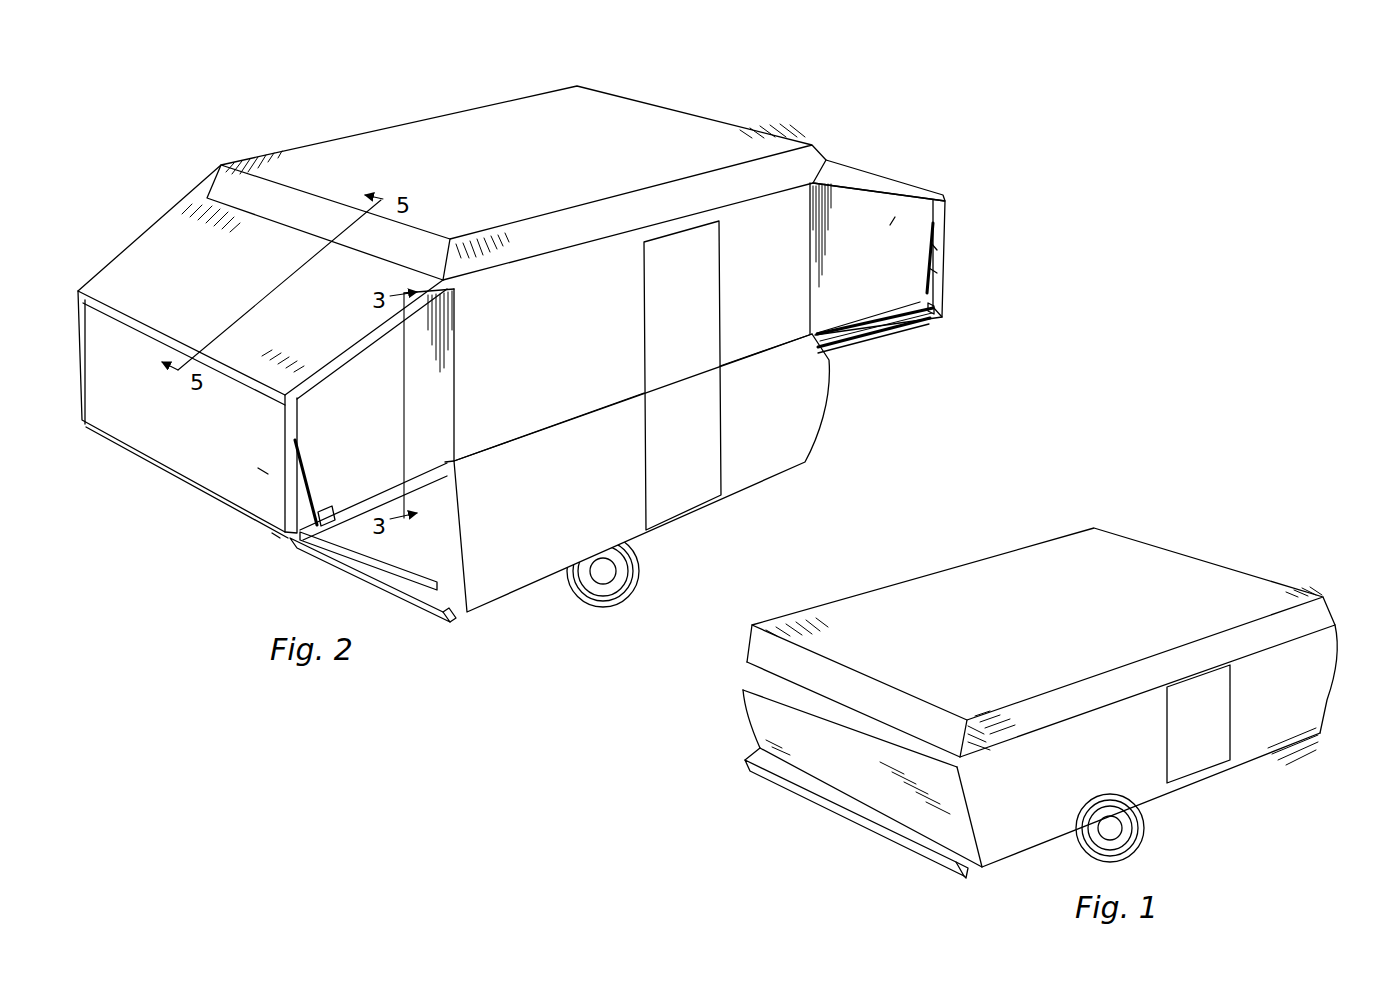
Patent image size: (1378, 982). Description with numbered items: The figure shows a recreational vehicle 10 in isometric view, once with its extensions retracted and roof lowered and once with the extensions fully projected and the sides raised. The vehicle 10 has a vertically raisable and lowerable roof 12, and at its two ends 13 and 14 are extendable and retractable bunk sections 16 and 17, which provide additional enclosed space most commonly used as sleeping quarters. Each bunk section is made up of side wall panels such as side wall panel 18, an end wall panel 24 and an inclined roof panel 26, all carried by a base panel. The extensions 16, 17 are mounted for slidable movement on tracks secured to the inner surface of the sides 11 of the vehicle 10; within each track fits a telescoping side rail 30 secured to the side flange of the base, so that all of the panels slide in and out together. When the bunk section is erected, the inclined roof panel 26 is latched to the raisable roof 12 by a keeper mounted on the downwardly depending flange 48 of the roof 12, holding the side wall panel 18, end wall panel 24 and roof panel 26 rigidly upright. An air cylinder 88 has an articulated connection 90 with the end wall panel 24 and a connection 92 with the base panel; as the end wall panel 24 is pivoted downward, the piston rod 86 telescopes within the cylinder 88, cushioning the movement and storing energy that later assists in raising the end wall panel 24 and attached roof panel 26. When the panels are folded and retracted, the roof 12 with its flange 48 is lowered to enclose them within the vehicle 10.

In FIG. 2, the recreational vehicle 10 is at (846, 410).
In FIG. 1, the recreational vehicle 10 is at (1331, 703).
In FIG. 2, the sides 11 is at (608, 485).
In FIG. 2, the roof 12 is at (611, 115).
In FIG. 1, the roof 12 is at (1135, 556).
In FIG. 1, the end 13 is at (757, 722).
In FIG. 2, the end 14 is at (831, 349).
In FIG. 1, the end 14 is at (1330, 697).
In FIG. 2, the bunk section 16 is at (108, 336).
In FIG. 2, the bunk section 17 is at (957, 210).
In FIG. 2, the side wall panel 18 is at (451, 462).
In FIG. 2, the end wall panel 24 is at (155, 432).
In FIG. 2, the inclined roof panel 26 is at (148, 266).
In FIG. 2, the side rail 30 is at (340, 560).
In FIG. 1, the downwardly depending flange 48 is at (768, 646).
In FIG. 2, the piston rod 86 is at (946, 272).
In FIG. 2, the air cylinder 88 is at (262, 470).
In FIG. 2, the articulated connection 90 is at (297, 433).
In FIG. 2, the connection 92 is at (330, 502).